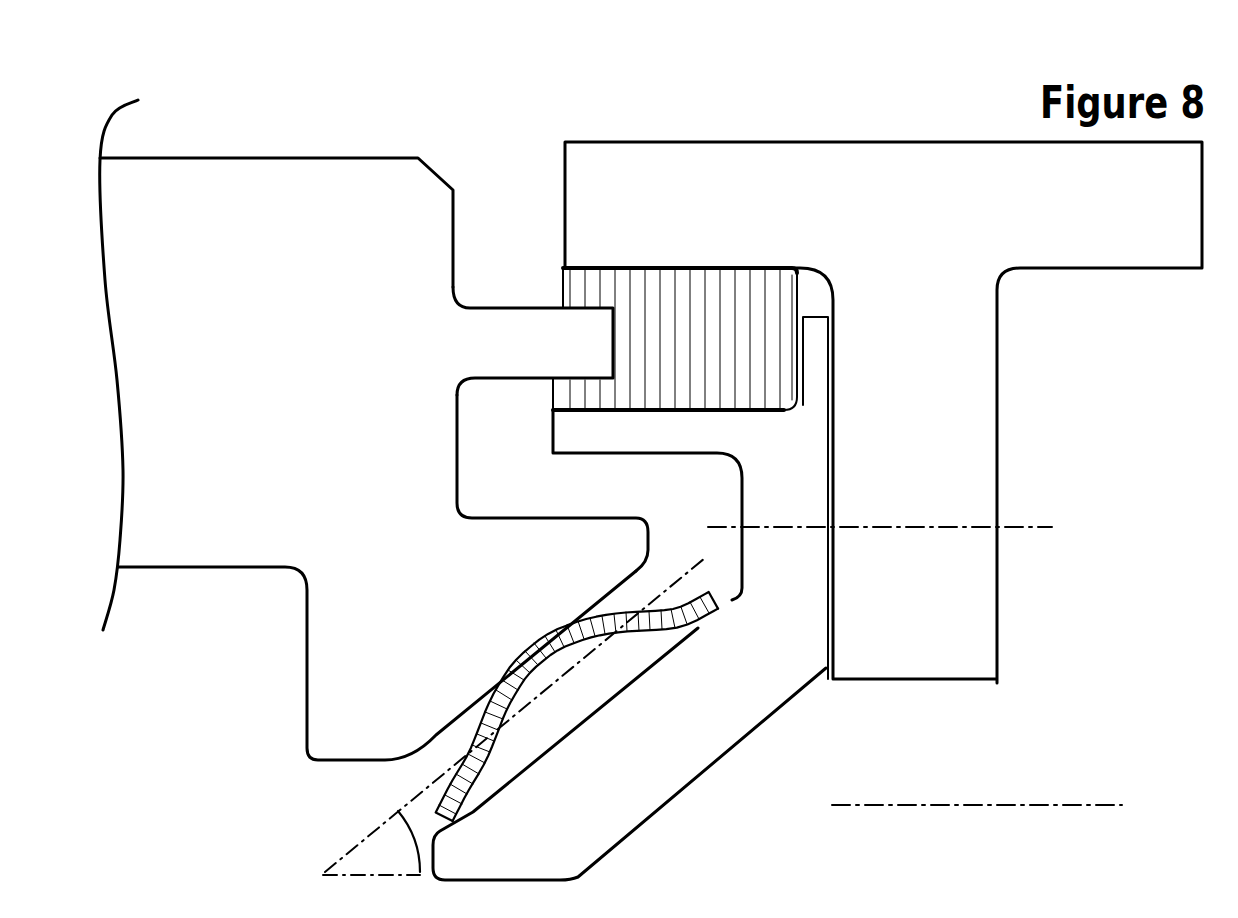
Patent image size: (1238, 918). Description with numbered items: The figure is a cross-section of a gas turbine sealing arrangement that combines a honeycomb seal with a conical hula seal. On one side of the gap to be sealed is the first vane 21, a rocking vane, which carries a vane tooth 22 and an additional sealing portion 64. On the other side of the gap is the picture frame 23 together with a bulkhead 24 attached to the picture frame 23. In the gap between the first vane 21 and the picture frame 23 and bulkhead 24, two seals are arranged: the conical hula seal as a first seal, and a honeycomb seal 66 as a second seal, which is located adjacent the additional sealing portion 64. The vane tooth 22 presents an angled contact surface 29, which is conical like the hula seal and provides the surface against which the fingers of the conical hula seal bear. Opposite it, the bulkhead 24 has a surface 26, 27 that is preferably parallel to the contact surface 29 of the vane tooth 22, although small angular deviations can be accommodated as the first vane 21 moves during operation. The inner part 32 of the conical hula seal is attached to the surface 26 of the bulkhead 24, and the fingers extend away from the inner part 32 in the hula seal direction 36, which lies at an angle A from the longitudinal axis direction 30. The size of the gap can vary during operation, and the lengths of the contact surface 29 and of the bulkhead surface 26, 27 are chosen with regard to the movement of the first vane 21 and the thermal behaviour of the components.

The first vane 21 is at (333, 273).
The vane tooth 22 is at (435, 637).
The picture frame 23 is at (955, 397).
The bulkhead 24 is at (633, 752).
The surface of the bulkhead 26 is at (473, 812).
The surface of the bulkhead 27 is at (698, 628).
The contact surface 29 is at (430, 738).
The longitudinal axis direction 30 is at (1012, 805).
The inner part 32 is at (453, 805).
The hula seal direction 36 is at (683, 578).
The additional sealing portion 64 is at (522, 338).
The honeycomb seal 66 is at (720, 338).